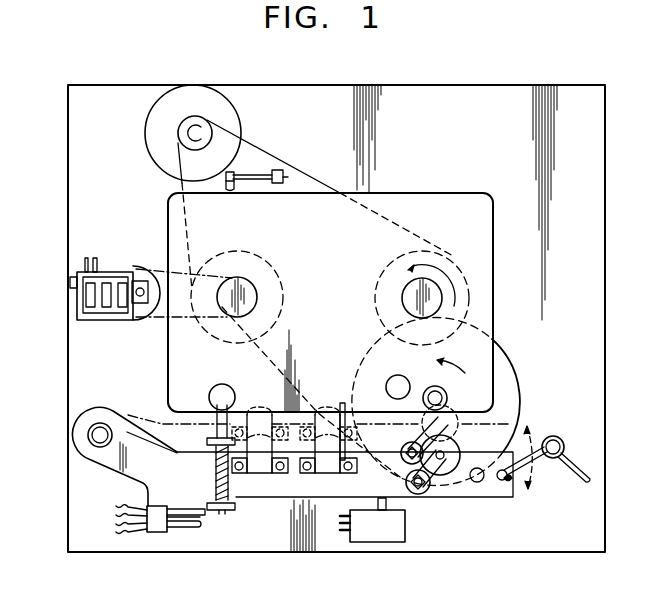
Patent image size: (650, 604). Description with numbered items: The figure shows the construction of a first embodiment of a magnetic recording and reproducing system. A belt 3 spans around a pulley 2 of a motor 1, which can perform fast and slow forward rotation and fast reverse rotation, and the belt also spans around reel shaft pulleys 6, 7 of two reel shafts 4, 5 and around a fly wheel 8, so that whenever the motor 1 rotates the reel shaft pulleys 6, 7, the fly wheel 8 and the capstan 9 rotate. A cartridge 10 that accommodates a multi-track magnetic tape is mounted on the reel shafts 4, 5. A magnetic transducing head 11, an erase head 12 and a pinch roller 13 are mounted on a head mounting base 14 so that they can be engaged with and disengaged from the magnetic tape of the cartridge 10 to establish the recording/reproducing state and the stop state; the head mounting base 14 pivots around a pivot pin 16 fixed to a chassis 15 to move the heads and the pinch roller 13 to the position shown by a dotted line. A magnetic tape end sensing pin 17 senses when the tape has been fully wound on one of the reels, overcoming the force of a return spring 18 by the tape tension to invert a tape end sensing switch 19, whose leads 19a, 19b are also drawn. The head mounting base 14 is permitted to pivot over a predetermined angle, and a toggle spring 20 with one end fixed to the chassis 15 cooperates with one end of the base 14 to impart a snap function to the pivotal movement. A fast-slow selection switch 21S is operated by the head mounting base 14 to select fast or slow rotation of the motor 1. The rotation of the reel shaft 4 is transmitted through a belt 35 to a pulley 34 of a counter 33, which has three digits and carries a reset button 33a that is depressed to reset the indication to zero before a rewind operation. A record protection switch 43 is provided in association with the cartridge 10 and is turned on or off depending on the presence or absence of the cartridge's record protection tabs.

The motor 1 is at (237, 120).
The pulley 2 is at (179, 133).
The belt 3 is at (257, 148).
The record protection switch 43 is at (283, 172).
The cartridge 10 is at (493, 204).
The counter 33 is at (112, 271).
The reset button 33a is at (70, 285).
The pulley 34 is at (142, 275).
The belt 35 is at (158, 319).
The reel shaft 4 is at (223, 306).
The reel shaft pulley 6 is at (283, 308).
The reel shaft pulley 7 is at (449, 262).
The reel shaft 5 is at (433, 293).
The fly wheel 8 is at (520, 398).
The capstan 9 is at (431, 389).
The head mounting base 14 is at (490, 488).
The pivot pin 16 is at (100, 447).
The magnetic tape end sensing pin 17 is at (216, 430).
The return spring 18 is at (229, 491).
The erase head 12 is at (251, 471).
The magnetic transducing head 11 is at (325, 471).
The tape end sensing switch 19 is at (157, 534).
The lead 19a is at (197, 509).
The lead 19b is at (196, 529).
The chassis 15 is at (273, 548).
The fast-slow selection switch 21S is at (388, 535).
The pinch roller 13 is at (448, 468).
The toggle spring 20 is at (573, 468).